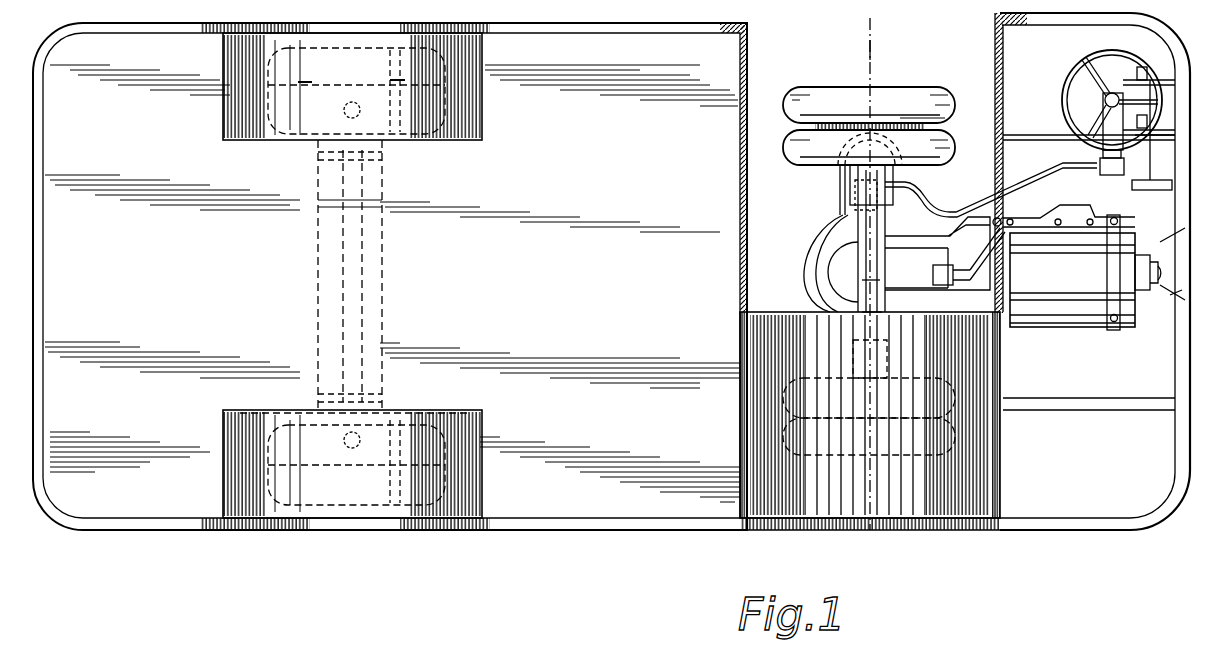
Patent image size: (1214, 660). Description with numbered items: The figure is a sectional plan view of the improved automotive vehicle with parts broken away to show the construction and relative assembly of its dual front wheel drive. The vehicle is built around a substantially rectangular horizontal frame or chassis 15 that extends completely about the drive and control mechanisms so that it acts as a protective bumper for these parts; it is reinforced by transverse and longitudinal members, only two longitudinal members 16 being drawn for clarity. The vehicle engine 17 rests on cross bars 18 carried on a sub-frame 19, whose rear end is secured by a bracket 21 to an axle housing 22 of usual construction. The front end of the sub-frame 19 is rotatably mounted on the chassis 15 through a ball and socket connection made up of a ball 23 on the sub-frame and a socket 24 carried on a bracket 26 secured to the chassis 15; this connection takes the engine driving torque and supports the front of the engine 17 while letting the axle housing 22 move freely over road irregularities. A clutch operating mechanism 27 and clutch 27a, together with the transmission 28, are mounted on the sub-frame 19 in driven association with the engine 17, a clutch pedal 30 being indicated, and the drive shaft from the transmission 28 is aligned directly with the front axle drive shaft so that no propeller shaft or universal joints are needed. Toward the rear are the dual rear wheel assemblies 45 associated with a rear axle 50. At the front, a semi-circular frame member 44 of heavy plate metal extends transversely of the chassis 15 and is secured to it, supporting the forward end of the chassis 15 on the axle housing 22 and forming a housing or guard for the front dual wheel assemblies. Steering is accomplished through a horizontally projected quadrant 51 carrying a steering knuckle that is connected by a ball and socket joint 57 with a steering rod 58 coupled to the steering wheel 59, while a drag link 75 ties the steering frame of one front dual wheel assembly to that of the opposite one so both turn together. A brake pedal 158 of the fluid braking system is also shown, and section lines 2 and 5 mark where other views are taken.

The section line 2 is at (898, 220).
The section line 5 is at (856, 19).
The frame or chassis 15 is at (611, 271).
The longitudinal frame members 16 is at (1025, 136).
The vehicle engine 17 is at (1072, 280).
The cross bars 18 is at (1110, 310).
The sub-frame 19 is at (1063, 323).
The bracket 21 is at (874, 265).
The axle housing 22 is at (862, 283).
The ball 23 is at (1142, 265).
The socket 24 is at (1143, 290).
The bracket 26 is at (1172, 320).
The clutch operating mechanism 27 is at (1008, 242).
The clutch 27a is at (1007, 300).
The transmission 28 is at (922, 288).
The clutch pedal 30 is at (1137, 70).
The semi-circular frame member 44 is at (746, 425).
The dual rear wheel assemblies 45 is at (290, 120).
The rear axle 50 is at (382, 288).
The quadrant 51 is at (860, 170).
The ball and socket joint 57 is at (860, 192).
The steering rod 58 is at (972, 205).
The steering wheel 59 is at (1097, 60).
The drag link 75 is at (840, 222).
The brake pedal 158 is at (1137, 121).